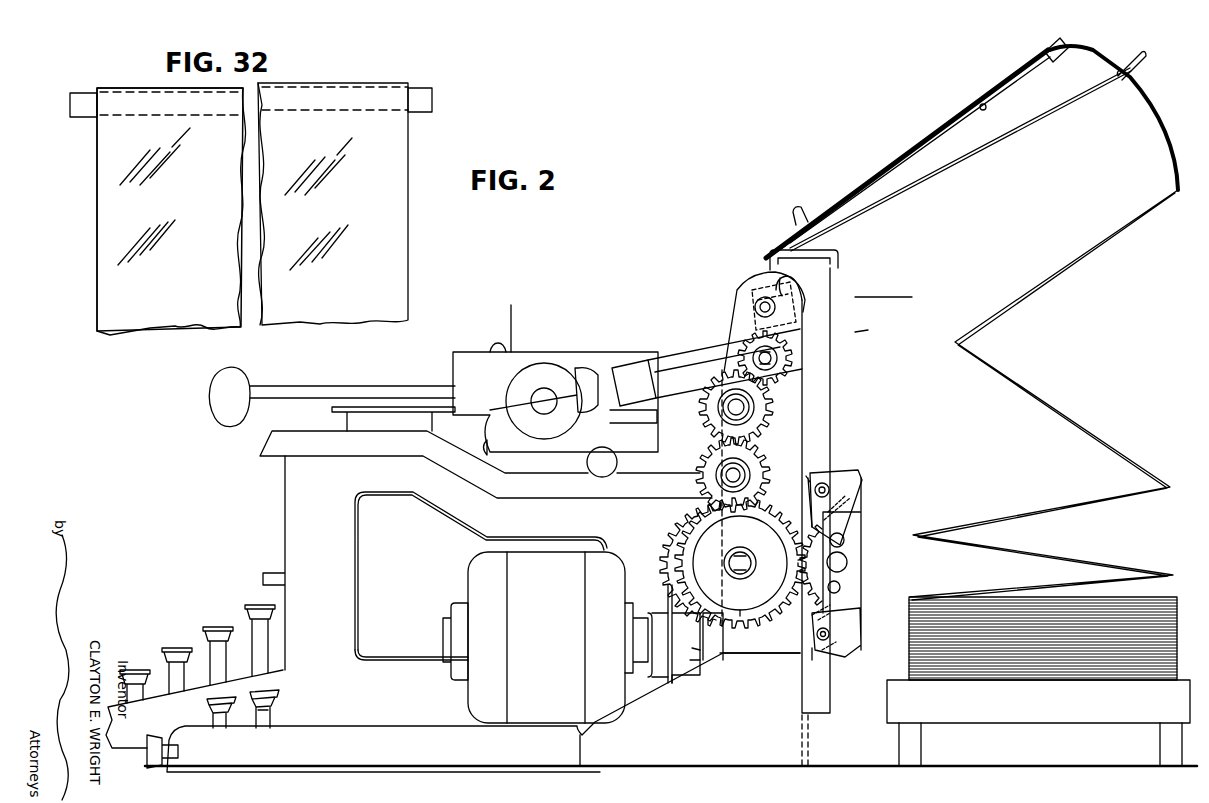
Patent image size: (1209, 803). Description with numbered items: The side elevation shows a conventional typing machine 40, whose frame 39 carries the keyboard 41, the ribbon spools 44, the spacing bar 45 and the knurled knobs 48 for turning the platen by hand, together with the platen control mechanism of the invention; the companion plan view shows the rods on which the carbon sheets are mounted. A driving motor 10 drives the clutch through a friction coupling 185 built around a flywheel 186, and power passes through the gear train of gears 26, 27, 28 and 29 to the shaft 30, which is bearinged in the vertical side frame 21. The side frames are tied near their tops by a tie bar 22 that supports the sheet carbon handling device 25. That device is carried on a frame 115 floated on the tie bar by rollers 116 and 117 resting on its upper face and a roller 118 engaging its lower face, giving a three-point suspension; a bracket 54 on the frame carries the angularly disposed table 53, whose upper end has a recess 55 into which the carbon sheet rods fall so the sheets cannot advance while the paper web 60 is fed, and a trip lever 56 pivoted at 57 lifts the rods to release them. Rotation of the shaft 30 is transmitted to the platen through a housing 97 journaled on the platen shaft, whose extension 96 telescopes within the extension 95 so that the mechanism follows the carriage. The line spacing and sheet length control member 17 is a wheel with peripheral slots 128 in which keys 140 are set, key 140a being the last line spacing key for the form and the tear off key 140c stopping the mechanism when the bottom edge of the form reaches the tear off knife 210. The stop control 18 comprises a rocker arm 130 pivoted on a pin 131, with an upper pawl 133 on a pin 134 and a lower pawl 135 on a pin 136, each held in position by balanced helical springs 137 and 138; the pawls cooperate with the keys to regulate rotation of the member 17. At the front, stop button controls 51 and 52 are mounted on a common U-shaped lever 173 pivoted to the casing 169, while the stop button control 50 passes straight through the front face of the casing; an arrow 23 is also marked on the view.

The driving motor 10 is at (610, 592).
The line spacing and sheet length control member 17 is at (668, 586).
The stop control 18 is at (856, 540).
The vertical side frame 21 is at (495, 412).
The tie bar 22 is at (774, 302).
The direction arrow 23 is at (912, 297).
The sheet carbon handling device 25 is at (906, 136).
The gear 26 is at (755, 608).
The gear 27 is at (745, 512).
The gear 28 is at (760, 408).
The gear 29 is at (758, 340).
The shaft 30 is at (778, 360).
The frame 39 is at (284, 540).
The typing machine 40 is at (284, 500).
The keyboard 41 is at (220, 628).
The spools 44 is at (332, 410).
The spacing bar 45 is at (240, 380).
The knurled knobs 48 is at (572, 424).
The stop button control 50 is at (160, 742).
The stop button control 51 is at (210, 700).
The stop button control 52 is at (278, 694).
The table 53 is at (870, 180).
The bracket 54 is at (836, 258).
The recess 55 is at (1056, 44).
The trip lever 56 is at (925, 150).
The pivot 57 is at (986, 108).
The paper web 60 is at (1172, 142).
The extension 95 is at (678, 362).
The extension 96 is at (600, 372).
The housing 97 is at (565, 372).
The frame 115 is at (826, 412).
The roller 116 is at (778, 278).
The roller 117 is at (736, 292).
The roller 118 is at (796, 312).
The slots 128 is at (688, 524).
The rocker arm 130 is at (840, 488).
The pin 131 is at (846, 562).
The pawl 133 is at (812, 472).
The pin 134 is at (822, 484).
The pawl 135 is at (816, 650).
The pin 136 is at (832, 634).
The helical springs 137 is at (838, 508).
The springs 138 is at (838, 608).
The keys 140 is at (698, 496).
The key 140a is at (680, 612).
The tear off key 140c is at (726, 566).
The casing 169 is at (408, 716).
The U-shaped lever 173 is at (268, 712).
The friction coupling 185 is at (705, 660).
The flywheel 186 is at (672, 676).
The tear off knife 210 is at (511, 345).